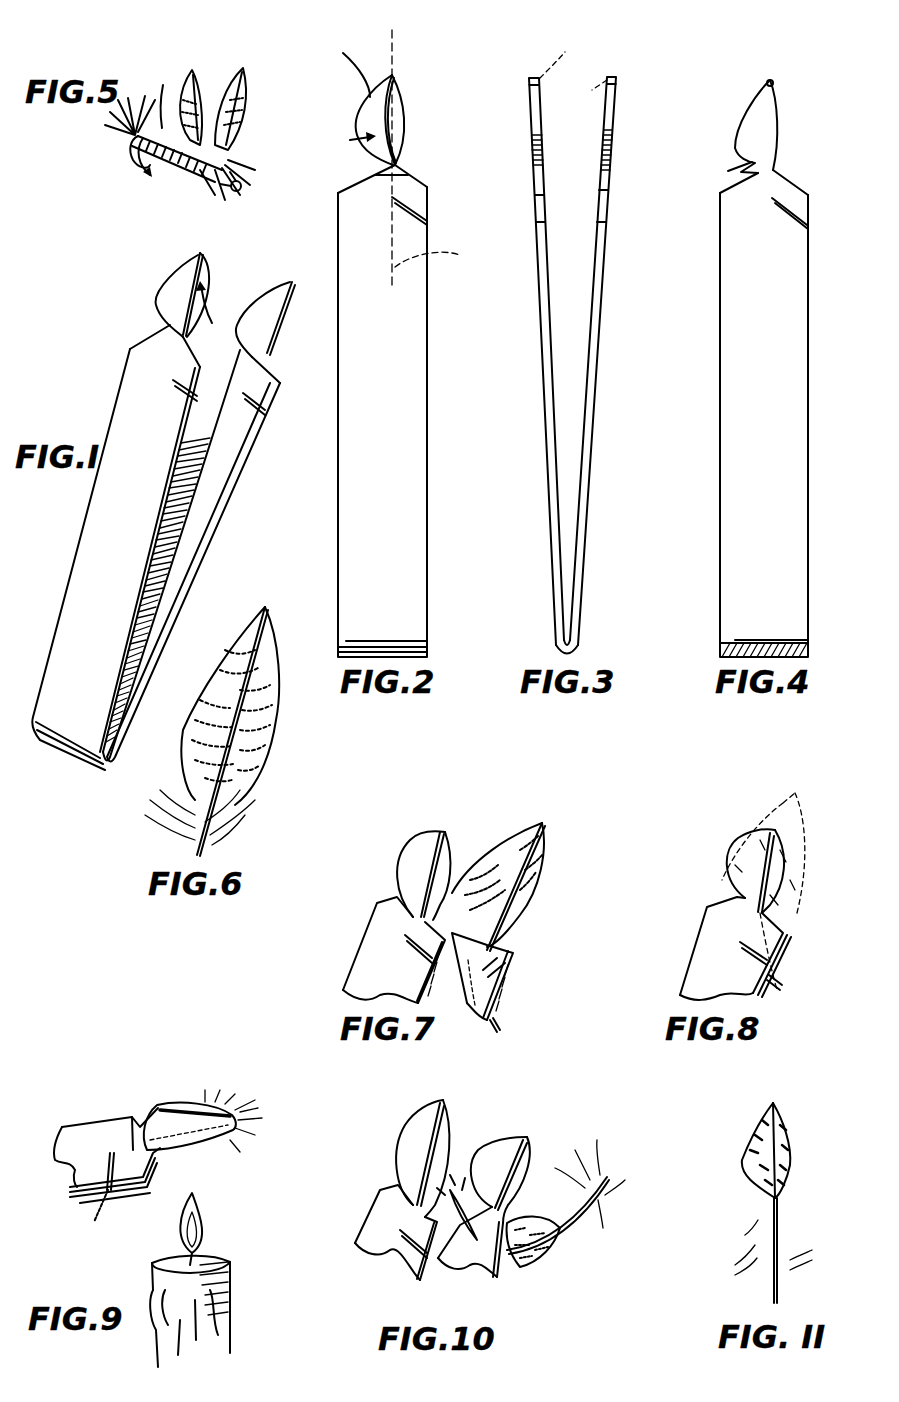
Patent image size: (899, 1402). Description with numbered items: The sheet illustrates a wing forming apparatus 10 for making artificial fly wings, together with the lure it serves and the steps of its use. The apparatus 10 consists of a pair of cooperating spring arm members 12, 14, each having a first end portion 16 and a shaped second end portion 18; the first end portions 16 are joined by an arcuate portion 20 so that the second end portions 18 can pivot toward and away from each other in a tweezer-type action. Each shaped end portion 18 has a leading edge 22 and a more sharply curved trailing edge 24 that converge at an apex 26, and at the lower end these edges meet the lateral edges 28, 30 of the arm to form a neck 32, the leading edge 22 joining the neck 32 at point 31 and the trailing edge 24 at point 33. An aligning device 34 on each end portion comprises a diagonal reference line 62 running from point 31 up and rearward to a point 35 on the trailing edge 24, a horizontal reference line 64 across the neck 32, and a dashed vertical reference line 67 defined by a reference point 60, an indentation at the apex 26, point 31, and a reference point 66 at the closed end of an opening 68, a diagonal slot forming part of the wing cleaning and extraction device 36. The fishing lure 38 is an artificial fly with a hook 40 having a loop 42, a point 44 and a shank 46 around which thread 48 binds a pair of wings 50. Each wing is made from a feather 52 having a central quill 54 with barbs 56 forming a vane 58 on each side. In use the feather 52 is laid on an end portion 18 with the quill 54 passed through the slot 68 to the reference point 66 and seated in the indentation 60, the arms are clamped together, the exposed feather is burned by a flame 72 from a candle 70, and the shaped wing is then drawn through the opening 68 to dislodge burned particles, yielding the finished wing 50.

In FIG. 1, the wing forming apparatus 10 is at (88, 329).
In FIG. 2, the wing forming apparatus 10 is at (434, 169).
In FIG. 1, the arm member 12 is at (62, 608).
In FIG. 2, the arm member 12 is at (366, 442).
In FIG. 3, the arm member 12 is at (536, 270).
In FIG. 7, the arm member 12 is at (357, 953).
In FIG. 8, the arm member 12 is at (688, 968).
In FIG. 9, the arm member 12 is at (85, 1127).
In FIG. 10, the arm member 12 is at (368, 1225).
In FIG. 1, the arm member 14 is at (213, 487).
In FIG. 3, the arm member 14 is at (600, 270).
In FIG. 4, the arm member 14 is at (746, 391).
In FIG. 7, the arm member 14 is at (475, 1010).
In FIG. 8, the arm member 14 is at (768, 993).
In FIG. 9, the arm member 14 is at (80, 1205).
In FIG. 10, the arm member 14 is at (468, 1270).
In FIG. 1, the first end portion 16 is at (63, 720).
In FIG. 2, the first end portion 16 is at (400, 640).
In FIG. 3, the first end portion 16 is at (557, 625).
In FIG. 4, the first end portion 16 is at (755, 640).
In FIG. 1, the second end portion 18 is at (165, 292).
In FIG. 2, the second end portion 18 is at (398, 97).
In FIG. 3, the second end portion 18 is at (530, 86).
In FIG. 4, the second end portion 18 is at (772, 135).
In FIG. 7, the second end portion 18 is at (403, 857).
In FIG. 8, the second end portion 18 is at (735, 877).
In FIG. 9, the second end portion 18 is at (178, 1110).
In FIG. 10, the second end portion 18 is at (397, 1150).
In FIG. 1, the arcuate portion 20 is at (103, 760).
In FIG. 3, the arcuate portion 20 is at (565, 656).
In FIG. 4, the arcuate portion 20 is at (785, 650).
In FIG. 1, the leading edge 22 is at (210, 265).
In FIG. 2, the leading edge 22 is at (403, 120).
In FIG. 4, the leading edge 22 is at (780, 111).
In FIG. 7, the leading edge 22 is at (448, 855).
In FIG. 8, the leading edge 22 is at (790, 862).
In FIG. 9, the leading edge 22 is at (222, 1143).
In FIG. 10, the leading edge 22 is at (450, 1125).
In FIG. 1, the trailing edge 24 is at (180, 268).
In FIG. 2, the trailing edge 24 is at (372, 108).
In FIG. 4, the trailing edge 24 is at (755, 101).
In FIG. 7, the trailing edge 24 is at (395, 878).
In FIG. 8, the trailing edge 24 is at (748, 833).
In FIG. 9, the trailing edge 24 is at (208, 1105).
In FIG. 10, the trailing edge 24 is at (411, 1125).
In FIG. 1, the apex 26 is at (200, 252).
In FIG. 2, the apex 26 is at (392, 75).
In FIG. 3, the apex 26 is at (530, 78).
In FIG. 4, the apex 26 is at (777, 90).
In FIG. 7, the apex 26 is at (438, 832).
In FIG. 8, the apex 26 is at (773, 832).
In FIG. 10, the apex 26 is at (441, 1100).
In FIG. 1, the lateral edge 28 is at (173, 465).
In FIG. 2, the lateral edge 28 is at (427, 353).
In FIG. 3, the lateral edge 28 is at (546, 417).
In FIG. 4, the lateral edge 28 is at (808, 412).
In FIG. 1, the lateral edge 30 is at (83, 527).
In FIG. 2, the lateral edge 30 is at (338, 447).
In FIG. 4, the lateral edge 30 is at (720, 418).
In FIG. 2, the point 31 is at (400, 163).
In FIG. 4, the point 31 is at (774, 170).
In FIG. 7, the point 31 is at (413, 903).
In FIG. 10, the point 31 is at (415, 1206).
In FIG. 1, the neck 32 is at (170, 325).
In FIG. 2, the neck 32 is at (345, 187).
In FIG. 4, the neck 32 is at (727, 170).
In FIG. 2, the point 33 is at (378, 157).
In FIG. 4, the point 33 is at (752, 161).
In FIG. 7, the point 33 is at (403, 896).
In FIG. 10, the point 33 is at (397, 1178).
In FIG. 1, the aligning device 34 is at (212, 315).
In FIG. 2, the aligning device 34 is at (348, 141).
In FIG. 2, the point 35 is at (344, 67).
In FIG. 7, the point 35 is at (415, 835).
In FIG. 10, the point 35 is at (430, 1117).
In FIG. 1, the wing cleaning and extraction device 36 is at (169, 383).
In FIG. 2, the wing cleaning and extraction device 36 is at (400, 216).
In FIG. 4, the wing cleaning and extraction device 36 is at (782, 217).
In FIG. 5, the fishing lure 38 is at (210, 66).
In FIG. 5, the hook 40 is at (135, 143).
In FIG. 5, the loop 42 is at (242, 185).
In FIG. 5, the point 44 is at (165, 175).
In FIG. 5, the shank 46 is at (162, 125).
In FIG. 5, the thread 48 is at (185, 172).
In FIG. 5, the wings 50 is at (190, 75).
In FIG. 11, the wings 50 is at (748, 1140).
In FIG. 6, the feather 52 is at (283, 702).
In FIG. 7, the feather 52 is at (546, 863).
In FIG. 8, the feather 52 is at (806, 828).
In FIG. 9, the feather 52 is at (191, 1080).
In FIG. 10, the feather 52 is at (534, 1269).
In FIG. 6, the quill 54 is at (200, 828).
In FIG. 7, the quill 54 is at (500, 1023).
In FIG. 8, the quill 54 is at (782, 985).
In FIG. 9, the quill 54 is at (97, 1225).
In FIG. 10, the quill 54 is at (565, 1230).
In FIG. 11, the quill 54 is at (790, 1140).
In FIG. 6, the barbs 56 is at (185, 732).
In FIG. 6, the vane 58 is at (235, 665).
In FIG. 1, the reference point 60 is at (293, 282).
In FIG. 2, the reference point 60 is at (393, 73).
In FIG. 3, the reference point 60 is at (573, 72).
In FIG. 4, the reference point 60 is at (770, 80).
In FIG. 7, the reference point 60 is at (446, 832).
In FIG. 10, the reference point 60 is at (443, 1100).
In FIG. 1, the diagonal reference line 62 is at (195, 268).
In FIG. 2, the diagonal reference line 62 is at (383, 110).
In FIG. 7, the diagonal reference line 62 is at (422, 850).
In FIG. 8, the diagonal reference line 62 is at (758, 848).
In FIG. 9, the diagonal reference line 62 is at (185, 1108).
In FIG. 10, the diagonal reference line 62 is at (420, 1132).
In FIG. 1, the horizontal reference line 64 is at (183, 343).
In FIG. 2, the horizontal reference line 64 is at (428, 190).
In FIG. 7, the horizontal reference line 64 is at (385, 900).
In FIG. 8, the horizontal reference line 64 is at (738, 905).
In FIG. 9, the horizontal reference line 64 is at (140, 1135).
In FIG. 10, the horizontal reference line 64 is at (400, 1200).
In FIG. 2, the reference point 66 is at (392, 198).
In FIG. 4, the reference point 66 is at (770, 199).
In FIG. 7, the reference point 66 is at (403, 937).
In FIG. 10, the reference point 66 is at (400, 1230).
In FIG. 2, the reference line 67 is at (435, 259).
In FIG. 1, the opening 68 is at (175, 395).
In FIG. 2, the opening 68 is at (428, 221).
In FIG. 3, the opening 68 is at (534, 213).
In FIG. 4, the opening 68 is at (808, 224).
In FIG. 7, the opening 68 is at (410, 950).
In FIG. 8, the opening 68 is at (775, 955).
In FIG. 9, the opening 68 is at (105, 1160).
In FIG. 10, the opening 68 is at (415, 1245).
In FIG. 9, the candle 70 is at (218, 1320).
In FIG. 9, the flame 72 is at (210, 1220).